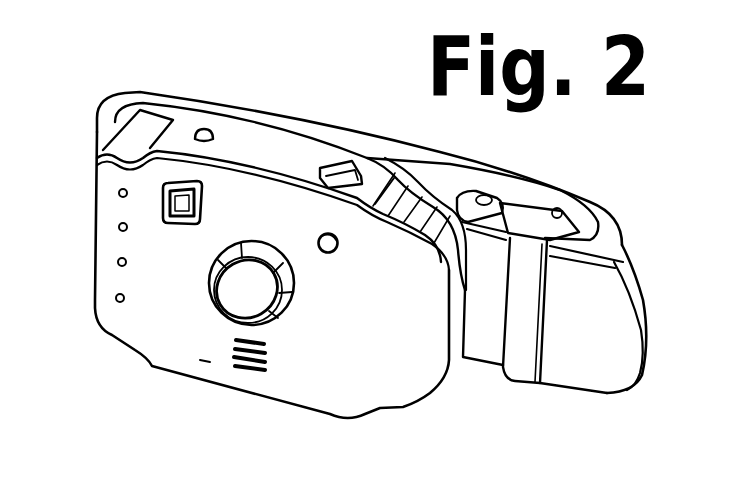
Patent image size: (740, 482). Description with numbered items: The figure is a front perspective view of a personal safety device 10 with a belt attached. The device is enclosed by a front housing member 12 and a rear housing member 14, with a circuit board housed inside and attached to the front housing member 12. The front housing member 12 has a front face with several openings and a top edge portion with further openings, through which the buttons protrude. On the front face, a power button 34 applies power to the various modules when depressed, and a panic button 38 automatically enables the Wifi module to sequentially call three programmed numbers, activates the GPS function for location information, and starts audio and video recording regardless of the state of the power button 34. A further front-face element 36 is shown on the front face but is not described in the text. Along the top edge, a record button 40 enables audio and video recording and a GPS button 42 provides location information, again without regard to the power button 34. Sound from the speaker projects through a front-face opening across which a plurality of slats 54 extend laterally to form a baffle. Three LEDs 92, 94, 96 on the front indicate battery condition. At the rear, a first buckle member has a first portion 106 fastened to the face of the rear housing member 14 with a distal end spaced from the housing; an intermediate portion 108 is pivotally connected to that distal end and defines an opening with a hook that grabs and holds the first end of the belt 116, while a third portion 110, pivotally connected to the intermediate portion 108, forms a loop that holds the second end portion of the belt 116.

The personal safety device 10 is at (95, 98).
The front housing member 12 is at (202, 363).
The rear housing member 14 is at (259, 133).
The power button 34 is at (460, 162).
The taking lens 36 is at (260, 303).
The panic button 38 is at (163, 203).
The record button 40 is at (200, 128).
The GPS button 42 is at (345, 171).
The slats 54 is at (262, 372).
The LED 92 is at (110, 196).
The LED 94 is at (113, 232).
The LED 96 is at (115, 270).
The first portion 106 is at (490, 190).
The intermediate portion 108 is at (549, 226).
The third portion 110 is at (522, 362).
The belt 116 is at (589, 203).